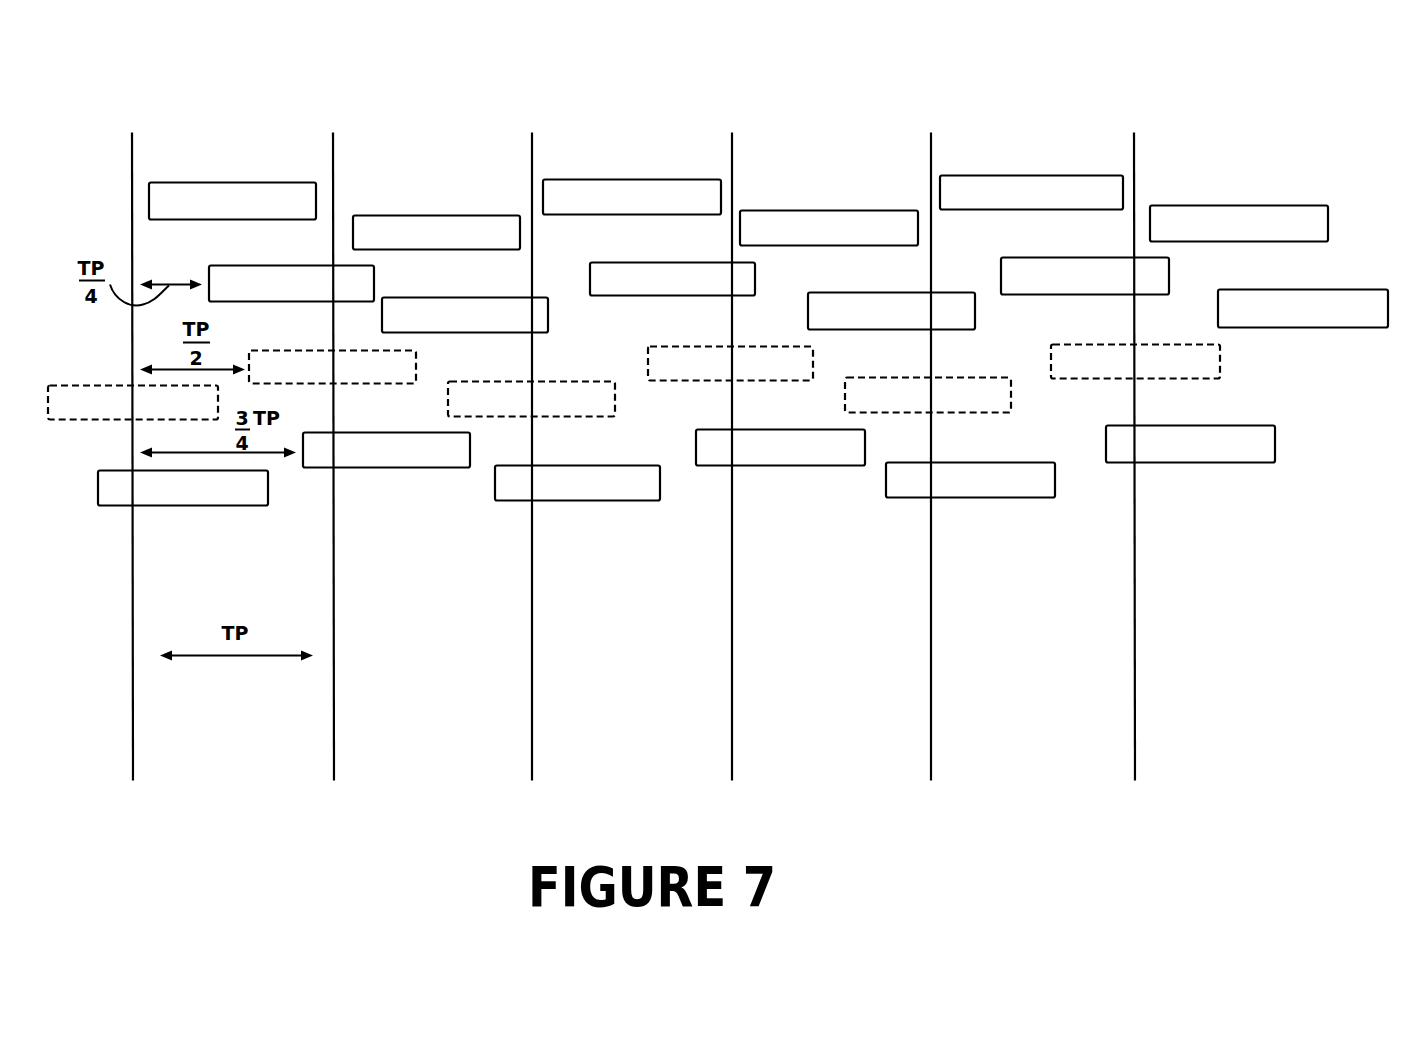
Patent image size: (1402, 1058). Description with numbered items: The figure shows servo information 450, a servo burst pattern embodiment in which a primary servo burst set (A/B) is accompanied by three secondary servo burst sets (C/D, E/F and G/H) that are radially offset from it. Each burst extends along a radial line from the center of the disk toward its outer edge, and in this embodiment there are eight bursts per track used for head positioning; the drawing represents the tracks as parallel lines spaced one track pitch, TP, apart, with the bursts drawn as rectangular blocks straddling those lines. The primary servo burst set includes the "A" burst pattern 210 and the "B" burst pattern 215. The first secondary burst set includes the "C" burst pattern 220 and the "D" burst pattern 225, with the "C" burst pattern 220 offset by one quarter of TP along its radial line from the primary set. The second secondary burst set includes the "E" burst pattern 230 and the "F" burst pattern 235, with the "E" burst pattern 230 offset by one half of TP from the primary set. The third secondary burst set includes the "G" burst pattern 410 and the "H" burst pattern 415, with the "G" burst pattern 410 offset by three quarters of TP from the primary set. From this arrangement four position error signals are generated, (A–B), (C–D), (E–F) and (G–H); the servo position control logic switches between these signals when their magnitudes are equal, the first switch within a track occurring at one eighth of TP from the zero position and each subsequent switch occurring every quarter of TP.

The servo information 450 is at (156, 58).
The "A" burst pattern 210 is at (253, 209).
The "B" burst pattern 215 is at (461, 242).
The "C" burst pattern 220 is at (293, 292).
The "D" burst pattern 225 is at (473, 324).
The "E" burst pattern 230 is at (388, 376).
The "F" burst pattern 235 is at (588, 408).
The "G" burst pattern 410 is at (396, 459).
The "H" burst pattern 415 is at (183, 497).